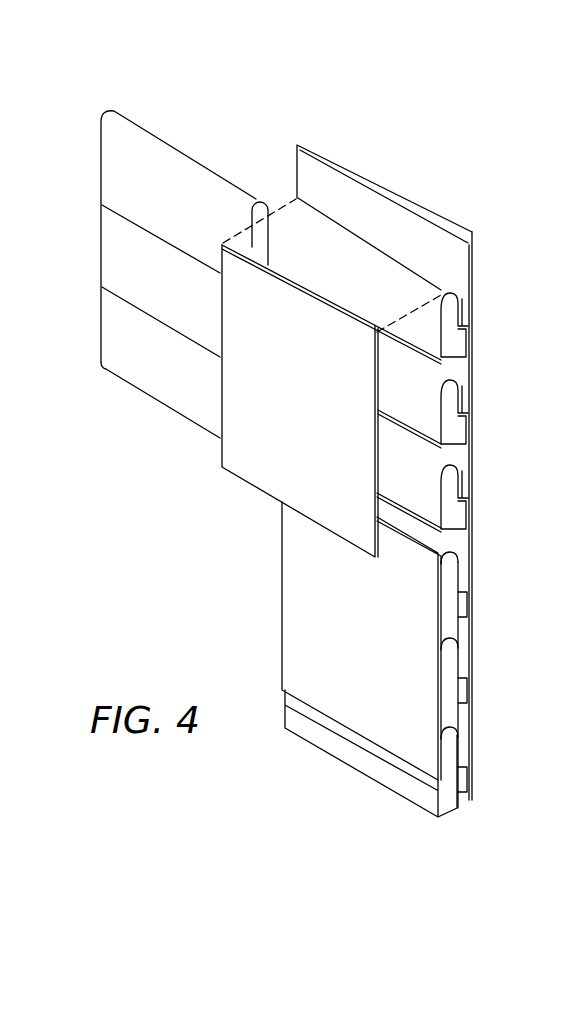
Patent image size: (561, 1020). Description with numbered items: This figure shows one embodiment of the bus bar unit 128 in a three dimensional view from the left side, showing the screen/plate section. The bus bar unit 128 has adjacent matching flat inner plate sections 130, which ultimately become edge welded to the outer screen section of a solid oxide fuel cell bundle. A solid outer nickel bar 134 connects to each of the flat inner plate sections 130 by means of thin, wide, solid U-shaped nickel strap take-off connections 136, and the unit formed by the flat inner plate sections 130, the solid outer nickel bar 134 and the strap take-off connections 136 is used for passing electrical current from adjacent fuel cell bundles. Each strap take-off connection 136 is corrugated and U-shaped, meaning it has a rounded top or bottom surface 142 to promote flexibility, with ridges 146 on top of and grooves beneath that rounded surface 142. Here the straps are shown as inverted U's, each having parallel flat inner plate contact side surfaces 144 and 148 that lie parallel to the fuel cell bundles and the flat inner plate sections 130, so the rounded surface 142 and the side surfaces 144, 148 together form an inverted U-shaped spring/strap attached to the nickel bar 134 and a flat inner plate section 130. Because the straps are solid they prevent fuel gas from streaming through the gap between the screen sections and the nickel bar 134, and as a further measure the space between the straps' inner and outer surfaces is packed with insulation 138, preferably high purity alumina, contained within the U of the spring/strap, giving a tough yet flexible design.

The bus bar unit 128 is at (263, 88).
The flat inner plate section 130 is at (228, 455).
The solid outer nickel bar 134 is at (335, 155).
The solid U-shaped nickel strap take-off connection 136 is at (391, 272).
The insulation 138 is at (108, 181).
The rounded top or bottom surface 142 is at (448, 384).
The flat inner plate contact side surface 144 is at (420, 493).
The ridge 146 is at (440, 288).
The flat inner plate contact side surface 148 is at (460, 481).